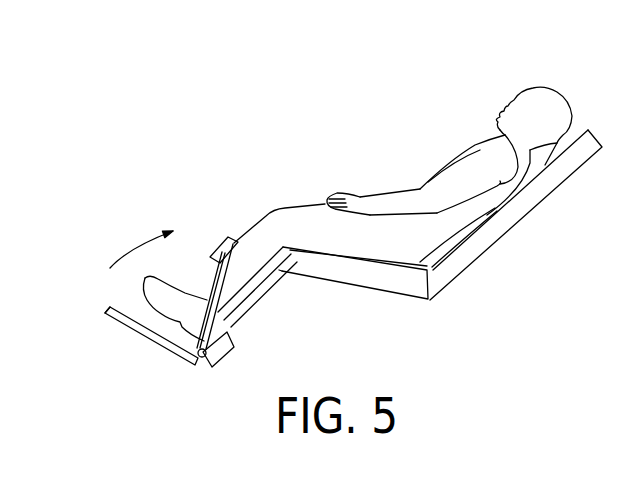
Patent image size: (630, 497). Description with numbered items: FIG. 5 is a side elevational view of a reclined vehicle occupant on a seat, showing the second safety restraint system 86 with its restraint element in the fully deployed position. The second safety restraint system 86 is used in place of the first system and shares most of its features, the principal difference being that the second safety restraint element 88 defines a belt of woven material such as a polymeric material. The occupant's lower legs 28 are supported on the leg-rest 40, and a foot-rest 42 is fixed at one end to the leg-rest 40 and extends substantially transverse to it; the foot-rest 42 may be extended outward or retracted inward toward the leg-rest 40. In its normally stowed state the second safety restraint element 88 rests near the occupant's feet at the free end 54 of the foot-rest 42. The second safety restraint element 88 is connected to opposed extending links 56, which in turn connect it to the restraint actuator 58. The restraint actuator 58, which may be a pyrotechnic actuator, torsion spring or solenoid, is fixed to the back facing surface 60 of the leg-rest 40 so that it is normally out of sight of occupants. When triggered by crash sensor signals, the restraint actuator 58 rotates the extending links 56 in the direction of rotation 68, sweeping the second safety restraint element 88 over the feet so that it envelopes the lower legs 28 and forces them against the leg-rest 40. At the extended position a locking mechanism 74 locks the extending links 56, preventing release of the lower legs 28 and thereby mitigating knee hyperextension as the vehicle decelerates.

The second safety restraint system 86 is at (420, 95).
The lower legs 28 is at (258, 208).
The leg-rest 40 is at (253, 296).
The back facing surface 60 is at (278, 283).
The second safety restraint element 88 is at (232, 237).
The extending links 56 is at (213, 287).
The direction of rotation 68 is at (137, 243).
The foot-rest 42 is at (158, 333).
The free end 54 is at (112, 317).
The locking mechanism 74 is at (197, 360).
The restraint actuator 58 is at (217, 350).